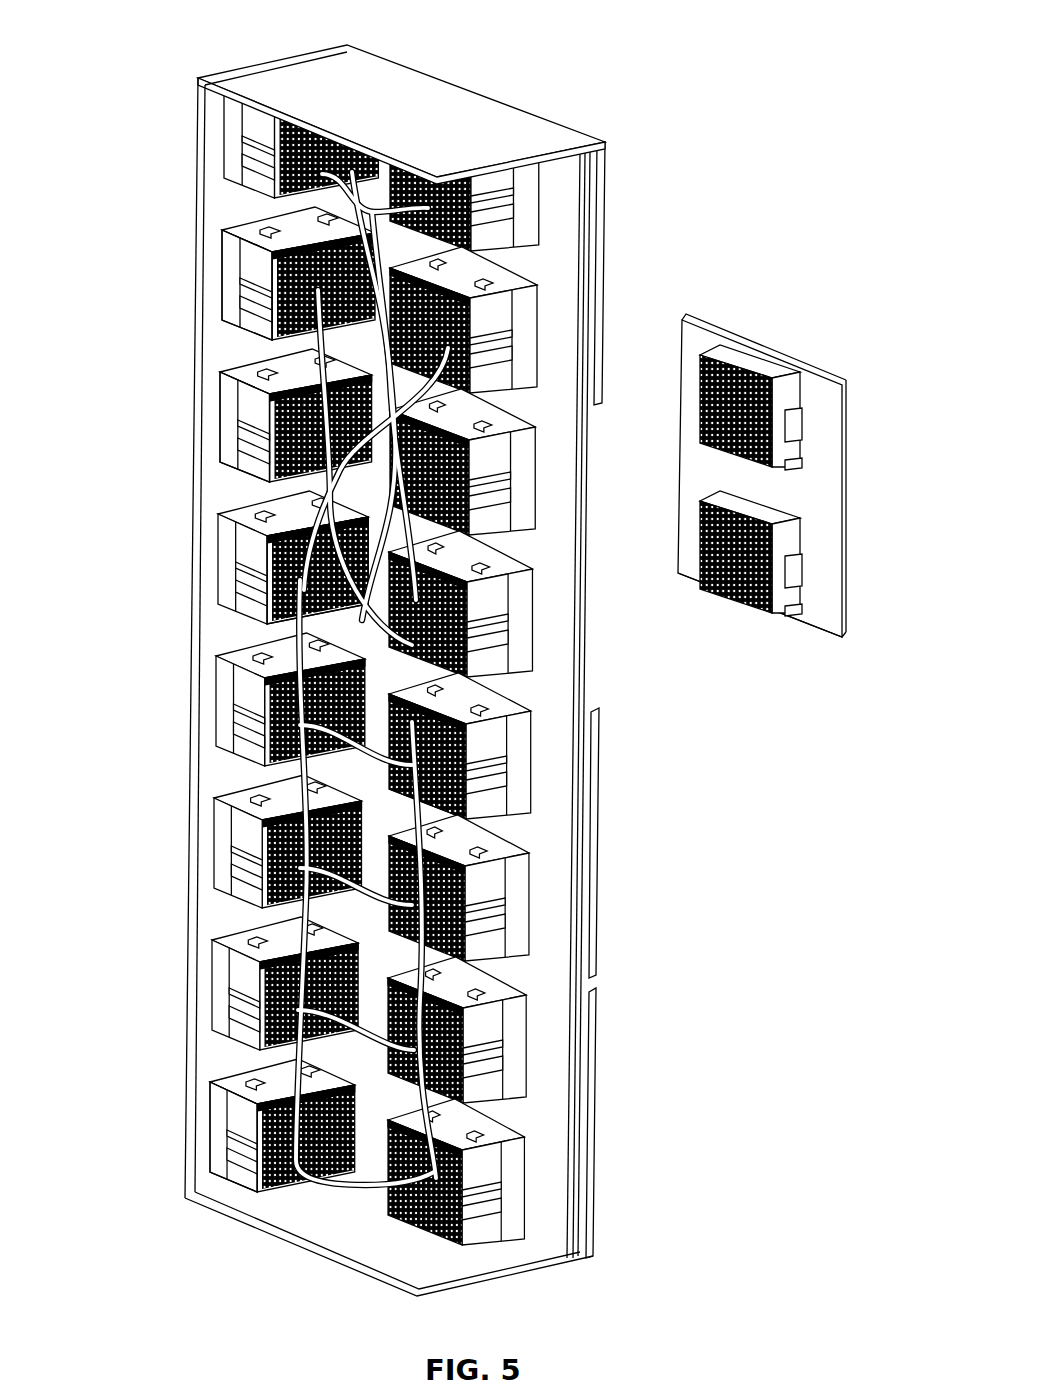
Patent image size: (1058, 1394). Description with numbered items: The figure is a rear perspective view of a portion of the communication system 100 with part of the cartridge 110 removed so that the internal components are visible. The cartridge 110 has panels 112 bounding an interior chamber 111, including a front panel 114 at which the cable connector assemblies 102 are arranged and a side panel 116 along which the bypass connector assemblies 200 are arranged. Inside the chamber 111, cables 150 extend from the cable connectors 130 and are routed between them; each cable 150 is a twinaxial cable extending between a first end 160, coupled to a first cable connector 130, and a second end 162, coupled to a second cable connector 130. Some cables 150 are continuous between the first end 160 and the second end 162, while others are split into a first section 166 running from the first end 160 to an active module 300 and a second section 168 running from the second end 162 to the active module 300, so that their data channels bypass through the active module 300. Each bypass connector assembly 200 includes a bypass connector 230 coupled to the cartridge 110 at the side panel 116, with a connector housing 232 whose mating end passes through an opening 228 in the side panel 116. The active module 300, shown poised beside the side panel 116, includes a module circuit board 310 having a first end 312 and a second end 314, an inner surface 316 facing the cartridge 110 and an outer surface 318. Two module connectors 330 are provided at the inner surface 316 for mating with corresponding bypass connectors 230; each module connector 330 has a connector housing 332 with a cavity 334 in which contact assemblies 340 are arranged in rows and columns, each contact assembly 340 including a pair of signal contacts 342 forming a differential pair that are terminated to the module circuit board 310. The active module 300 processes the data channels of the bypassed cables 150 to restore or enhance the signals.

The communication system 100 is at (164, 44).
The cartridge 110 is at (386, 652).
The cable connector assembly 102 is at (205, 290).
The chamber 111 is at (211, 504).
The panel 112 is at (212, 352).
The front panel 114 is at (212, 198).
The side panel 116 is at (542, 1110).
The cable connector 130 is at (212, 712).
The cable 150 is at (447, 302).
The first end 160 is at (241, 664).
The second end 162 is at (265, 600).
The first section 166 is at (290, 250).
The second section 168 is at (255, 462).
The bypass connector assembly 200 is at (542, 675).
The opening 228 is at (488, 806).
The bypass connector 230 is at (502, 736).
The connector housing 232 is at (490, 810).
The active module 300 is at (781, 476).
The module circuit board 310 is at (808, 500).
The first end 312 is at (816, 364).
The second end 314 is at (826, 642).
The inner surface 316 is at (834, 584).
The outer surface 318 is at (834, 565).
The module connector 330 is at (796, 591).
The connector housing 332 is at (781, 590).
The cavity 334 is at (703, 578).
The contact assembly 340 is at (713, 365).
The signal contact 342 is at (742, 366).